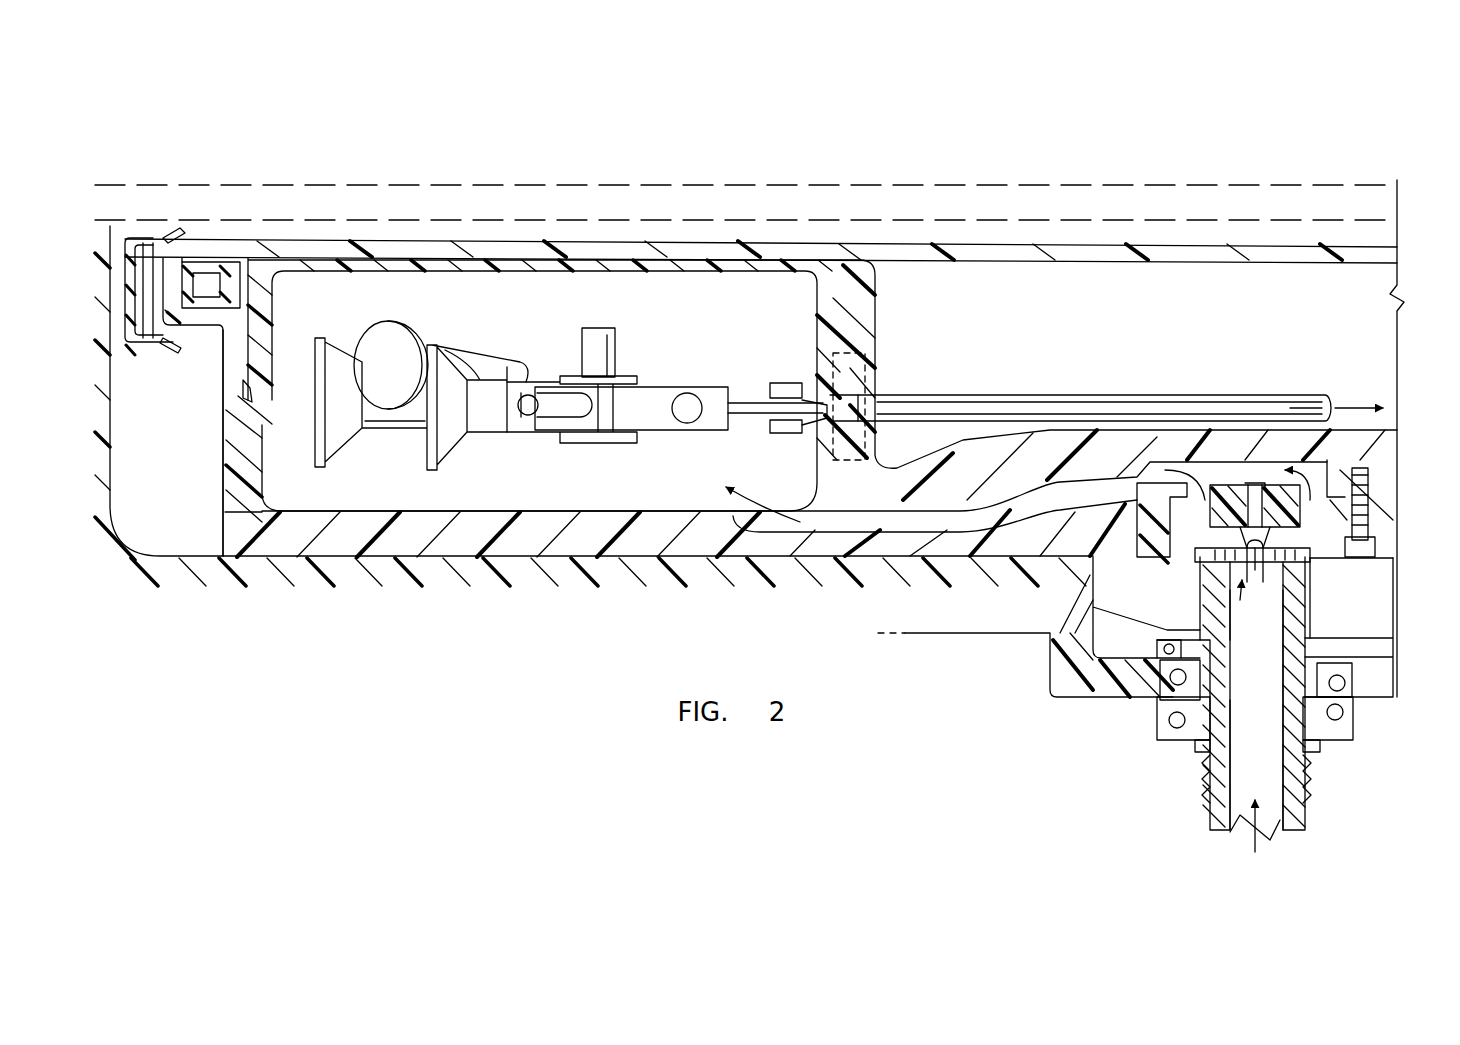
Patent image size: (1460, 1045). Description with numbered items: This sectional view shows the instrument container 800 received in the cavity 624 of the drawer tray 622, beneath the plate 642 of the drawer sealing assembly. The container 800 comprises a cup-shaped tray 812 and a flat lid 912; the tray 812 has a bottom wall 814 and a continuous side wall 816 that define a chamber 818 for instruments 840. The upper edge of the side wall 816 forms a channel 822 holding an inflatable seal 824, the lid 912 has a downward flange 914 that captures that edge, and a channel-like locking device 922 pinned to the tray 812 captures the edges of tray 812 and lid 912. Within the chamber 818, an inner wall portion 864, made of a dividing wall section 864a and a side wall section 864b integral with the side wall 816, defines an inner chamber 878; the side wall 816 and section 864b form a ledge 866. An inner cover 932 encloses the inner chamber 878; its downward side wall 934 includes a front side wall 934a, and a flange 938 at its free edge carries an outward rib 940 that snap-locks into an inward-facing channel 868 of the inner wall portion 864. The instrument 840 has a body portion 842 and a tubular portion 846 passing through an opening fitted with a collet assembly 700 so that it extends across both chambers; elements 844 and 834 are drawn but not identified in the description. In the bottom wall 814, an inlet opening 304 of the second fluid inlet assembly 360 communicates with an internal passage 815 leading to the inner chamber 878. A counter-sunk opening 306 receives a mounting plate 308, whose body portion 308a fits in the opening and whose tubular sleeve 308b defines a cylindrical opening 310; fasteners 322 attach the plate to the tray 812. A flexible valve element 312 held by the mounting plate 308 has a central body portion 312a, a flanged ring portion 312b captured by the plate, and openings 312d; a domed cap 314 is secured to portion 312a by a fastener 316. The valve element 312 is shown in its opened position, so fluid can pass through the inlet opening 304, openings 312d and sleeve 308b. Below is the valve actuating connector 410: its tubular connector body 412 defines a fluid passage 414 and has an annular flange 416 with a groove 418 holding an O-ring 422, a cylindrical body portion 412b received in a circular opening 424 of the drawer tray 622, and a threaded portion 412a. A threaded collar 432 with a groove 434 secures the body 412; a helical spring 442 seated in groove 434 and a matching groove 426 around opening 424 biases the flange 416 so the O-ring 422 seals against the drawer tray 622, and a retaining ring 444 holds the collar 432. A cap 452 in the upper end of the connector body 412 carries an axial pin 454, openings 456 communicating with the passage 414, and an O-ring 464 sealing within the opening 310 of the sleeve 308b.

The plate 642 is at (1066, 186).
The chamber 818 is at (1078, 293).
The lid 912 is at (777, 242).
The instrument container 800 is at (922, 226).
The cavity 624 is at (175, 530).
The tray 812 is at (282, 545).
The locking device 922 is at (128, 238).
The flange 914 is at (146, 275).
The channel 822 is at (185, 270).
The seal 824 is at (212, 268).
The side wall 934 is at (275, 305).
The front side wall 934a is at (862, 335).
The inner cover 932 is at (598, 263).
The inner chamber 878 is at (673, 310).
The side wall 816 is at (227, 415).
The rib 940 is at (252, 405).
The ledge 866 is at (243, 392).
The bottom wall 814 is at (600, 503).
The internal passage 815 is at (840, 517).
The inner wall portion 864 is at (268, 476).
The side wall section 864b is at (275, 458).
The dividing wall section 864a is at (827, 437).
The instrument 840 is at (483, 378).
The channel 868 is at (253, 410).
The flange 938 is at (330, 443).
The body portion 842 is at (645, 420).
The end cap 844 is at (524, 406).
The collet assembly 700 is at (829, 357).
The tubular portion 846 is at (1012, 410).
The support wall 834 is at (1087, 430).
The drawer tray 622 is at (930, 618).
The cylindrical body portion 308a is at (1137, 520).
The mounting plate 308 is at (1133, 543).
The valve element 312 is at (1215, 487).
The fastener 316 is at (1254, 485).
The inlet opening 304 is at (1230, 483).
The opening 312d is at (1200, 490).
The central body portion 312a is at (1283, 485).
The counter-sunk opening 306 is at (1330, 460).
The flanged ring portion 312b is at (1347, 460).
The cap element 314 is at (1372, 512).
The fasteners 322 is at (1365, 548).
The opening 310 is at (1200, 573).
The pin 454 is at (1170, 558).
The sleeve 308b is at (1315, 560).
The second fluid inlet assembly 360 is at (1320, 576).
The O-ring 464 is at (1307, 597).
The openings 456 is at (1272, 595).
The cap 452 is at (1095, 600).
The annular groove 418 is at (1165, 630).
The flange 416 is at (1157, 645).
The fluid passage 414 is at (1270, 783).
The valve actuating connector 410 is at (1208, 795).
The connector body 412 is at (1345, 639).
The O-ring 422 is at (1160, 662).
The opening 424 is at (1350, 677).
The annular groove 426 is at (1340, 680).
The annular groove 434 is at (1160, 695).
The biasing element 442 is at (1350, 720).
The threaded collar 432 is at (1170, 712).
The retaining ring 444 is at (1310, 743).
The threaded portion 412a is at (1202, 763).
The cylindrical body portion 412b is at (1173, 683).